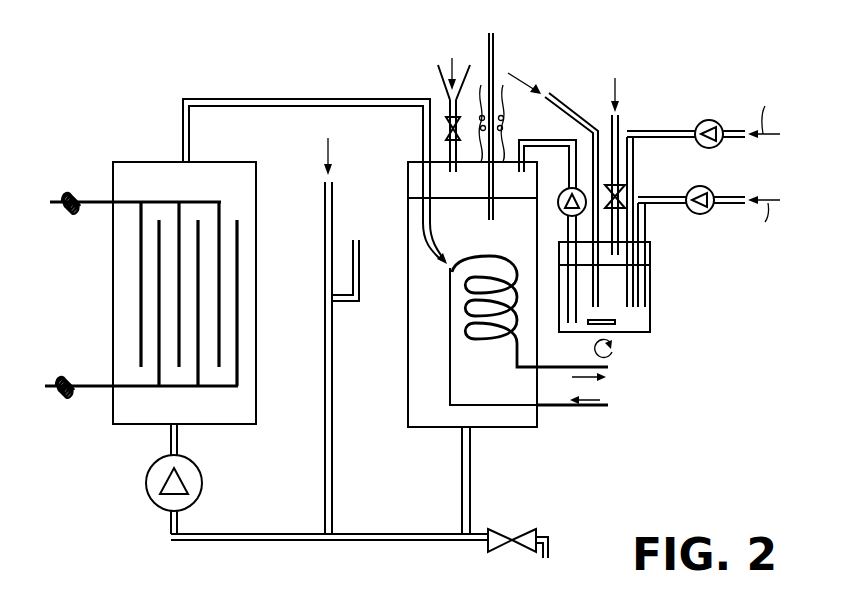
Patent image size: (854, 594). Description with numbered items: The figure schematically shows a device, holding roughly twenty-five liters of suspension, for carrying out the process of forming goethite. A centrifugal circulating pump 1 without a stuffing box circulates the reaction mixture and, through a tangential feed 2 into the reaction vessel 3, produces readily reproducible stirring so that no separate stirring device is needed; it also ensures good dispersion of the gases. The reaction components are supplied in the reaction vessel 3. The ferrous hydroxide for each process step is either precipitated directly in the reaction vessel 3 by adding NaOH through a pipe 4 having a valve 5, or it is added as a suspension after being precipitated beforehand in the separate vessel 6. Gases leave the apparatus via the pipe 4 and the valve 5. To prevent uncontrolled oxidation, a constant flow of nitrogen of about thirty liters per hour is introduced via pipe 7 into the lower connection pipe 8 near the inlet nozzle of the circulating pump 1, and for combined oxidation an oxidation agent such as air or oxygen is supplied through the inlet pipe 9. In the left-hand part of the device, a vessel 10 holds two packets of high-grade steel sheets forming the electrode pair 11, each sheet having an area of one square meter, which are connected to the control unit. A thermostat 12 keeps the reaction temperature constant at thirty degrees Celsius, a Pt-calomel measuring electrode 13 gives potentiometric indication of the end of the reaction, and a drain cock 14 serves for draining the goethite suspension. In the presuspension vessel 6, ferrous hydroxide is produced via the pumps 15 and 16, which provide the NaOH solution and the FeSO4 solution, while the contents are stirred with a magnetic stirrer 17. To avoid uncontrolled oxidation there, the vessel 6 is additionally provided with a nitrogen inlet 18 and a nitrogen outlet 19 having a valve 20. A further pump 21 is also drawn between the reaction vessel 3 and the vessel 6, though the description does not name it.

The circulating pump 1 is at (147, 479).
The tangential feed 2 is at (425, 232).
The reaction vessel 3 is at (472, 348).
The pipe 4 is at (457, 132).
The valve 5 is at (446, 95).
The separate vessel 6 is at (604, 287).
The pipe 7 is at (333, 215).
The lower connection pipe 8 is at (262, 541).
The inlet pipe 9 is at (359, 268).
The vessel 10 is at (150, 293).
The electrode pair 11 is at (50, 380).
The thermostat 12 is at (608, 405).
The Pt-calomel measuring electrode 13 is at (491, 33).
The drain cock 14 is at (527, 545).
The pump 15 is at (703, 120).
The pump 16 is at (707, 188).
The magnetic stirrer 17 is at (600, 325).
The nitrogen inlet 18 is at (578, 113).
The nitrogen outlet 19 is at (619, 140).
The valve 20 is at (623, 196).
The transfer pump 21 is at (562, 195).